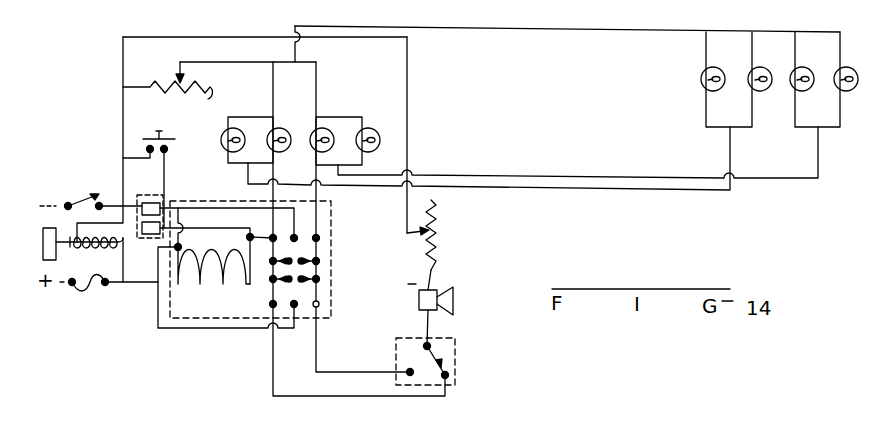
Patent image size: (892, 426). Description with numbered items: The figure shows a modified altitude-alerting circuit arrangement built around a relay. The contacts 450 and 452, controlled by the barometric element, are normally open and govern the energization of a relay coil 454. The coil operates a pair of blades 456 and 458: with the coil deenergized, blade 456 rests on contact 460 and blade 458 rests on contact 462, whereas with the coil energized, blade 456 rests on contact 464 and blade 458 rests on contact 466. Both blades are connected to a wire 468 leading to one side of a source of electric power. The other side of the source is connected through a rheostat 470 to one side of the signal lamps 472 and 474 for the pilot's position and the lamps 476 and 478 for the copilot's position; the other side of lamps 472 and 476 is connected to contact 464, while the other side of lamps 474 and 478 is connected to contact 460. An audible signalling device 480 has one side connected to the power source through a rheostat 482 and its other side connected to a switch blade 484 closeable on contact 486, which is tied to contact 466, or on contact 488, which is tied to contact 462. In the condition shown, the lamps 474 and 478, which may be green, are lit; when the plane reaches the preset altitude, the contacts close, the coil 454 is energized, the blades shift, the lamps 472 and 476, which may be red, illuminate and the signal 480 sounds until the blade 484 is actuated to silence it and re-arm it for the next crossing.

The contact 450 is at (141, 195).
The contact 452 is at (148, 234).
The relay coil 454 is at (201, 286).
The blade 456 is at (296, 247).
The blade 458 is at (296, 295).
The contact 460 is at (320, 258).
The contact 462 is at (318, 280).
The contact 464 is at (272, 262).
The contact 466 is at (270, 281).
The wire 468 is at (130, 283).
The rheostat 470 is at (167, 89).
The signal lamp 472 is at (277, 127).
The signal lamp 474 is at (370, 127).
The lamp 476 is at (722, 67).
The lamp 478 is at (847, 67).
The audible signalling device 480 is at (437, 290).
The rheostat 482 is at (440, 232).
The switch blade 484 is at (436, 358).
The contact 486 is at (446, 376).
The contact 488 is at (411, 371).